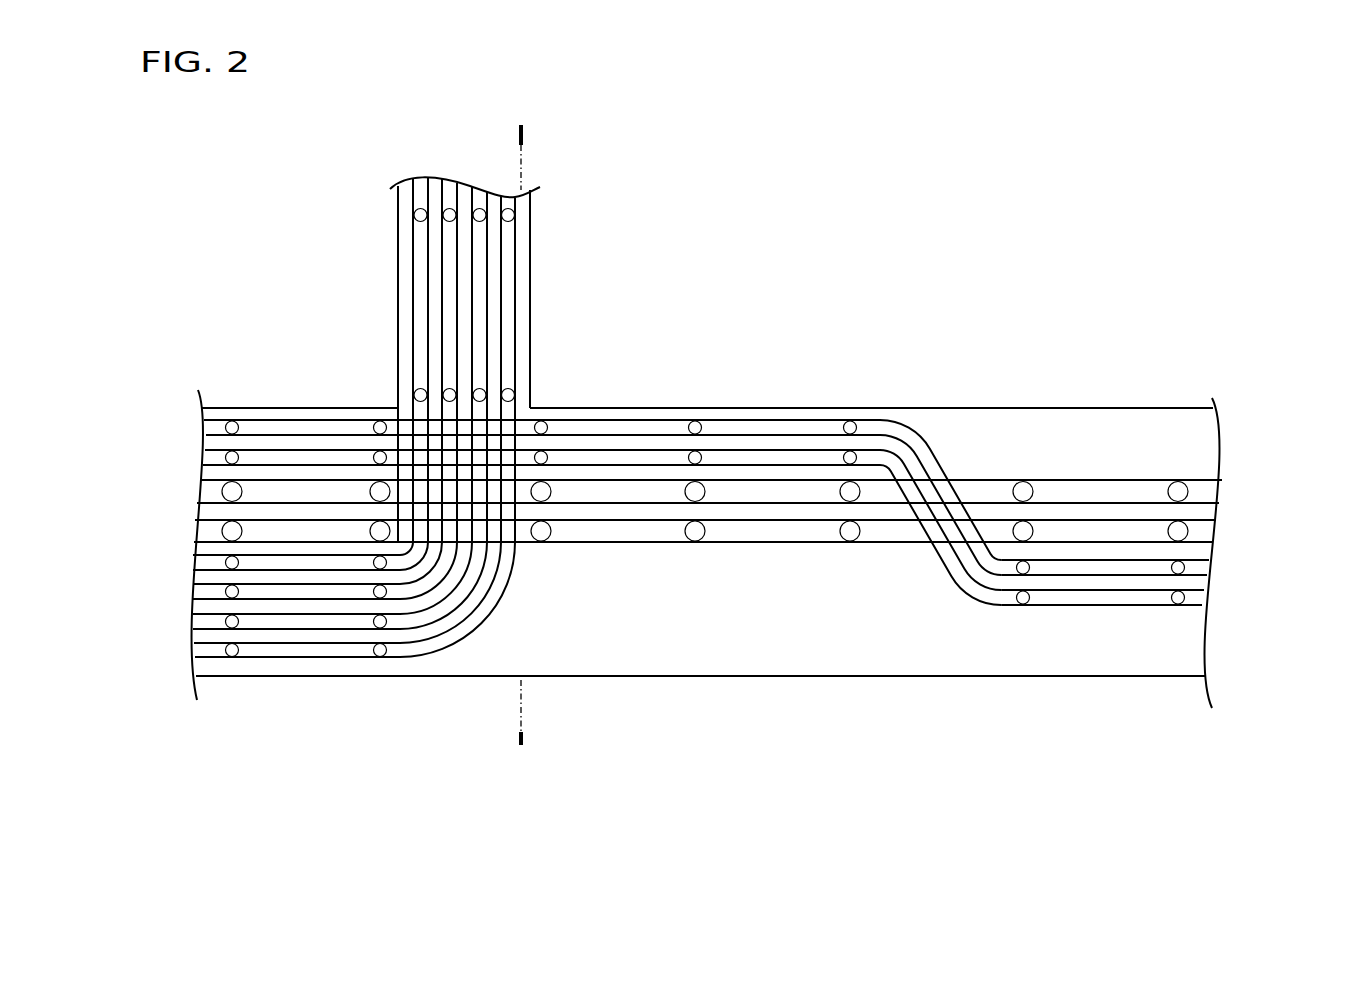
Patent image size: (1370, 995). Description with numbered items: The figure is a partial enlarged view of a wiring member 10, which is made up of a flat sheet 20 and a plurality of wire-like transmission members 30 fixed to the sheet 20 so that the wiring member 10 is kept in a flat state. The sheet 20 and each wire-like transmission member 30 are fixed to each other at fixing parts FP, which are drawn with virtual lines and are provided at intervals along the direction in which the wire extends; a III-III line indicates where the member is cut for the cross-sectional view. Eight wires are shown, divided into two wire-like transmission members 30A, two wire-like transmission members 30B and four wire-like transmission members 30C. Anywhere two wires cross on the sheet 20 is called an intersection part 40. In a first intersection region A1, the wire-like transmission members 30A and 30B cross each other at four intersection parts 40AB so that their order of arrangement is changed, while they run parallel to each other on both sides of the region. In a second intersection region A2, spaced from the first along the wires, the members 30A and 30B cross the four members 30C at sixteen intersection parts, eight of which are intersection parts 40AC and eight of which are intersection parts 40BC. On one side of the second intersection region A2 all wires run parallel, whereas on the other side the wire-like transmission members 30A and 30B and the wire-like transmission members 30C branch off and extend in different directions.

The wiring member 10 is at (906, 234).
The sheet 20 is at (793, 678).
The wire-like transmission member 30 is at (718, 387).
The wire-like transmission member 30A is at (207, 533).
The wire-like transmission member 30B is at (207, 455).
The wire-like transmission member 30C is at (200, 651).
The intersection part 40 is at (720, 494).
The intersection part 40AB is at (948, 483).
The intersection part 40AC is at (515, 522).
The intersection part 40BC is at (526, 456).
The first intersection region A1 is at (898, 571).
The second intersection region A2 is at (399, 408).
The fixing part FP is at (727, 408).
The III-III line III is at (568, 735).